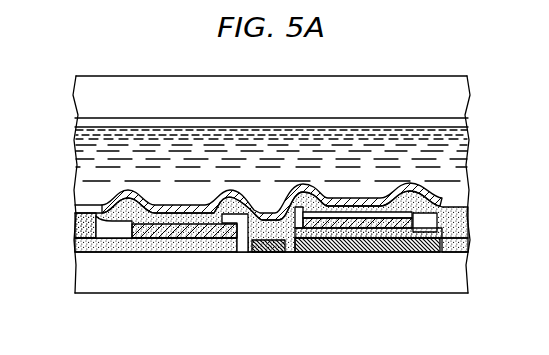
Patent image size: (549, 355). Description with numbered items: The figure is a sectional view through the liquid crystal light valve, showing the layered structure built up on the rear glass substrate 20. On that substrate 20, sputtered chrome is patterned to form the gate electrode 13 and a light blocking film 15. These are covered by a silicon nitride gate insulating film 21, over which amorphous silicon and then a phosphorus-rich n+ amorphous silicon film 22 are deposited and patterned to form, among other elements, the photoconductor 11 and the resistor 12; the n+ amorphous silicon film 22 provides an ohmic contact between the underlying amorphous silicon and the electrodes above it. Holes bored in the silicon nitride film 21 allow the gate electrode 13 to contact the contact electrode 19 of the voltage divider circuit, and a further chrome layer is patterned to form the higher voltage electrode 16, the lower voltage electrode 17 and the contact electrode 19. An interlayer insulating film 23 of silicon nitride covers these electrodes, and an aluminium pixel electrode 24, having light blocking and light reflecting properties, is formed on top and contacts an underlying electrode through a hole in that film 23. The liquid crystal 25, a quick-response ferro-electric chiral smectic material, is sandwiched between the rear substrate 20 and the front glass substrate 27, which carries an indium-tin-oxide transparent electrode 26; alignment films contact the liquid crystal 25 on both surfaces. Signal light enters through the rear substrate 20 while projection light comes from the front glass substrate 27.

The photoconductor 11 is at (188, 251).
The resistor 12 is at (332, 251).
The gate electrode 13 is at (268, 251).
The light blocking film 15 is at (362, 251).
The higher voltage electrode 16 is at (76, 218).
The lower voltage electrode 17 is at (442, 251).
The contact electrode 19 is at (249, 251).
The glass substrate 20 is at (113, 268).
The gate insulating film 21 is at (73, 247).
The n+ amorphous silicon film 22 is at (408, 251).
The interlayer insulating film 23 is at (466, 226).
The pixel electrode 24 is at (444, 197).
The liquid crystal 25 is at (447, 149).
The transparent electrode 26 is at (462, 122).
The front glass substrate 27 is at (456, 92).